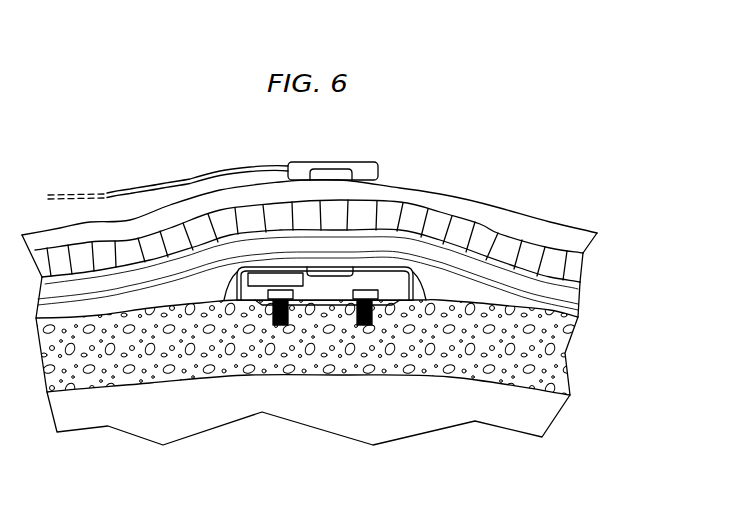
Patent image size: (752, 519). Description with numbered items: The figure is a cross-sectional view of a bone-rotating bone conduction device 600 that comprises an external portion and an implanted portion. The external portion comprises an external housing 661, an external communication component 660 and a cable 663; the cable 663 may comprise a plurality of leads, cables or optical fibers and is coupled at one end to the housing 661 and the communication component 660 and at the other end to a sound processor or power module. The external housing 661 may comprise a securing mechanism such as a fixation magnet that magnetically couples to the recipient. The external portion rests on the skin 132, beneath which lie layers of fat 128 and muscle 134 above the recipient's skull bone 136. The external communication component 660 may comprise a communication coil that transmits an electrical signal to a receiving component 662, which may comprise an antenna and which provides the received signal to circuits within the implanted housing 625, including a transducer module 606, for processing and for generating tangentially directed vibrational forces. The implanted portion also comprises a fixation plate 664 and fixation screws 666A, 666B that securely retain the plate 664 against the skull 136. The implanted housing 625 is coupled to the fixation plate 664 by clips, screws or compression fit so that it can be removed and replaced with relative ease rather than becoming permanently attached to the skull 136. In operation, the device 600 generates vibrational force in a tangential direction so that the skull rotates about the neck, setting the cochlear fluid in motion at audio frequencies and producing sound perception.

The bone conduction device 600 is at (396, 136).
The external communication component 660 is at (349, 163).
The external housing 661 is at (293, 162).
The cable 663 is at (145, 186).
The skin 132 is at (594, 242).
The fat 128 is at (582, 270).
The muscle 134 is at (583, 300).
The bone 136 is at (568, 347).
The implanted housing 625 is at (413, 294).
The transducer module 606 is at (250, 287).
The receiving component 662 is at (322, 278).
The fixation plate 664 is at (348, 301).
The fixation screw 666A is at (281, 326).
The fixation screw 666B is at (365, 326).